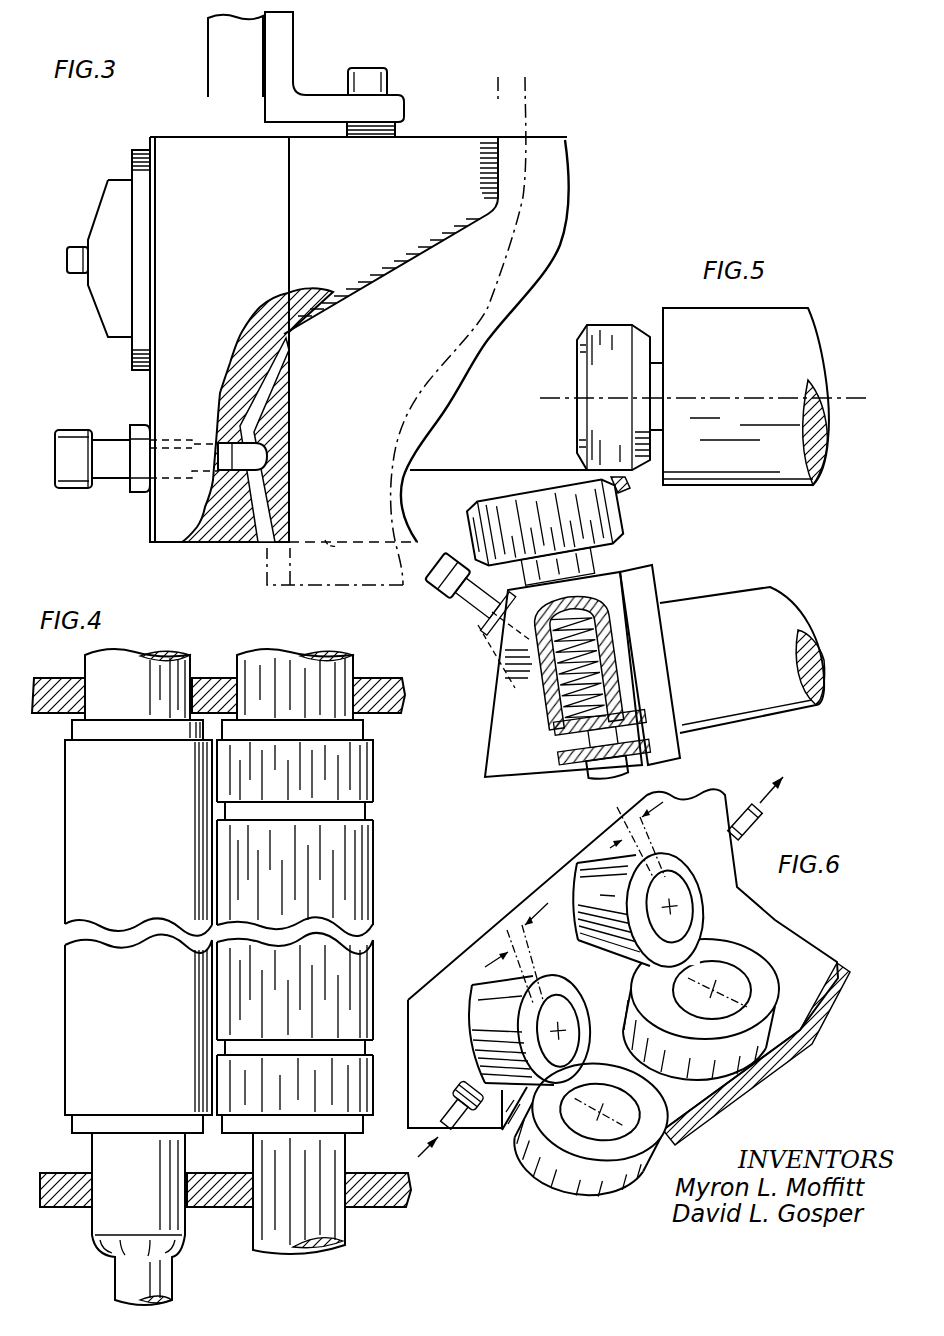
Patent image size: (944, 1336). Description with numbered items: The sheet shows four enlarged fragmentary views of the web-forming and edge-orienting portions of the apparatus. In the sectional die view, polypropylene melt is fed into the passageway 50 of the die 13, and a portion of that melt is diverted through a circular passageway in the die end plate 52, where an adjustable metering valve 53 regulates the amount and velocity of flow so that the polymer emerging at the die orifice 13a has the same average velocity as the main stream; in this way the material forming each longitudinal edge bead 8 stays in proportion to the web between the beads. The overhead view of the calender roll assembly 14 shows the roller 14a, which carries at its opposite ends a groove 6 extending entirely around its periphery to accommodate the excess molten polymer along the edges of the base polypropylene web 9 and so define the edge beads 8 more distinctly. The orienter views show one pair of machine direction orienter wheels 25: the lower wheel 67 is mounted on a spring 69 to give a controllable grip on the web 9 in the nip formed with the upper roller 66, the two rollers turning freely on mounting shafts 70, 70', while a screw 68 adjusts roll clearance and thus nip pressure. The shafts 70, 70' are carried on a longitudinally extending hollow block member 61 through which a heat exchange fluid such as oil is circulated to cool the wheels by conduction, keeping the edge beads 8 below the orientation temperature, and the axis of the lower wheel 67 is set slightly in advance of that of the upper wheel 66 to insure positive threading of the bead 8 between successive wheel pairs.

In FIG. 3, the die 13 is at (437, 108).
In FIG. 3, the passageway 50 is at (547, 173).
In FIG. 3, the base polypropylene web 9 is at (397, 356).
In FIG. 5, the base polypropylene web 9 is at (459, 468).
In FIG. 3, the die end plate 52 is at (150, 398).
In FIG. 3, the adjustable metering valve 53 is at (66, 486).
In FIG. 3, the die orifice 13a is at (332, 538).
In FIG. 3, the longitudinal edge bead 8 is at (267, 563).
In FIG. 5, the longitudinal edge bead 8 is at (629, 491).
In FIG. 5, the upper roller 66 is at (610, 324).
In FIG. 6, the upper roller 66 is at (592, 888).
In FIG. 5, the machine direction orienter wheels 25 is at (806, 312).
In FIG. 5, the mounting shaft 70' is at (738, 507).
In FIG. 5, the lower wheel 67 is at (469, 512).
In FIG. 6, the lower wheel 67 is at (744, 972).
In FIG. 5, the screw 68 is at (432, 594).
In FIG. 5, the spring 69 is at (556, 721).
In FIG. 5, the mounting shaft 70 is at (742, 644).
In FIG. 4, the calender roll assembly 14 is at (68, 880).
In FIG. 4, the roller 14a is at (360, 882).
In FIG. 4, the groove 6 is at (365, 812).
In FIG. 6, the groove / hollow block member 61 is at (556, 878).